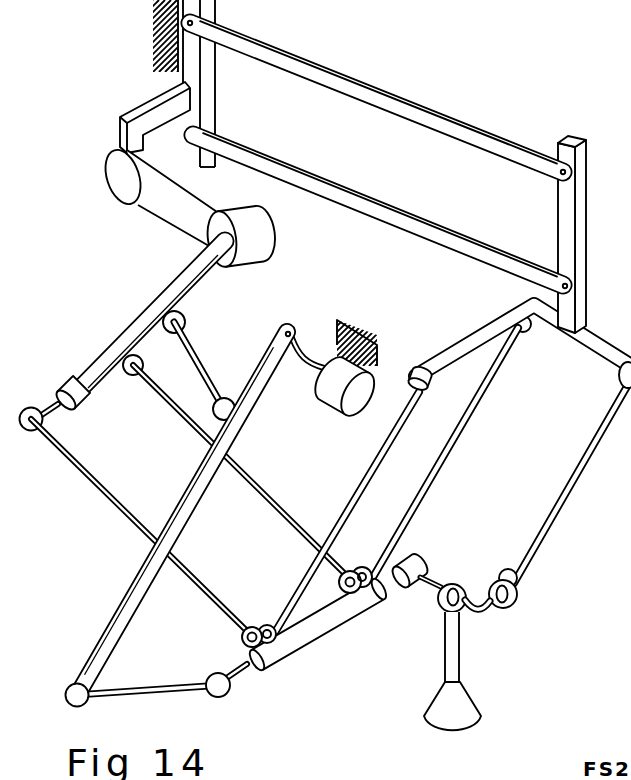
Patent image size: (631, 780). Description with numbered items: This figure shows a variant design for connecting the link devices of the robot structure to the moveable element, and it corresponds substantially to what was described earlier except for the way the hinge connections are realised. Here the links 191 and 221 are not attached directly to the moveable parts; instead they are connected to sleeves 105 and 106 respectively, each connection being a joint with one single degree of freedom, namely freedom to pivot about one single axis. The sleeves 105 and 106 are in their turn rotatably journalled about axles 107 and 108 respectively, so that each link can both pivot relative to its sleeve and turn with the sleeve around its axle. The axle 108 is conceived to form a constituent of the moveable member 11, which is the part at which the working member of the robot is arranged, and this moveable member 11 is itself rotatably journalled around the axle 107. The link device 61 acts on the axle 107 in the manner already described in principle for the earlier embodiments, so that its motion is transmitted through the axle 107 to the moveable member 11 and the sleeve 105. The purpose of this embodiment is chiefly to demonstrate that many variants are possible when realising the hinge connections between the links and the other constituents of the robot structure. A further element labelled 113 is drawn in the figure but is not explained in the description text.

The moveable member 11 is at (429, 587).
The link device 61 is at (108, 580).
The sleeve 105 is at (310, 637).
The sleeve 106 is at (514, 603).
The axle 107 is at (237, 673).
The axle 108 is at (480, 614).
The connecting link 113 is at (200, 355).
The link 191 is at (579, 470).
The link 221 is at (360, 490).